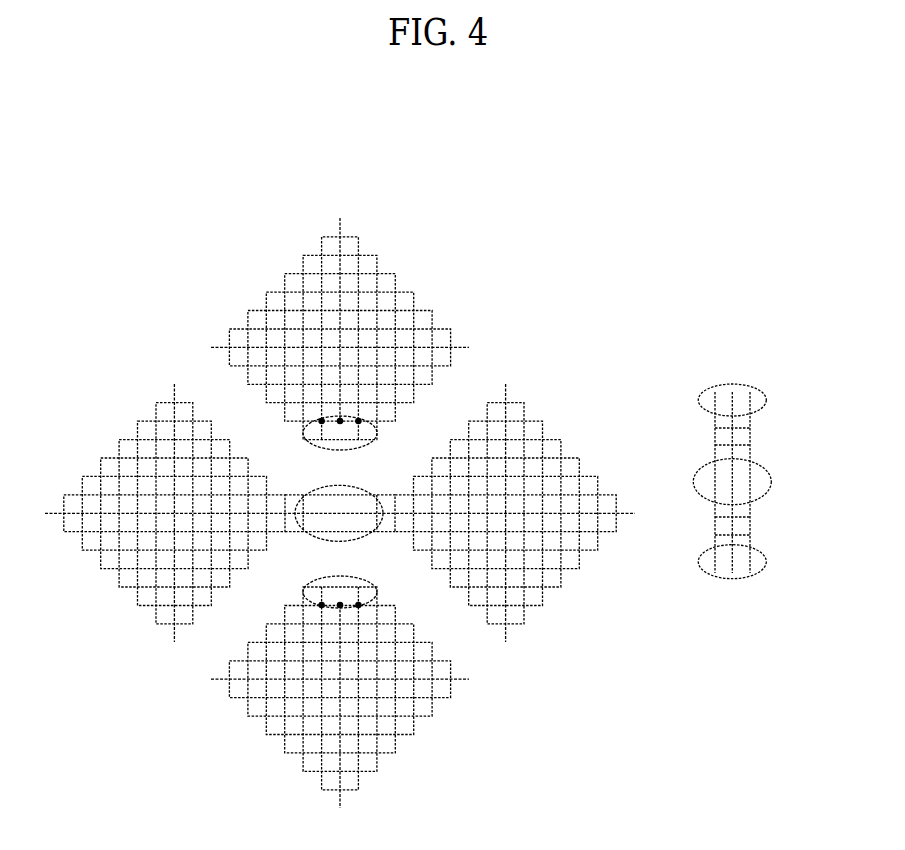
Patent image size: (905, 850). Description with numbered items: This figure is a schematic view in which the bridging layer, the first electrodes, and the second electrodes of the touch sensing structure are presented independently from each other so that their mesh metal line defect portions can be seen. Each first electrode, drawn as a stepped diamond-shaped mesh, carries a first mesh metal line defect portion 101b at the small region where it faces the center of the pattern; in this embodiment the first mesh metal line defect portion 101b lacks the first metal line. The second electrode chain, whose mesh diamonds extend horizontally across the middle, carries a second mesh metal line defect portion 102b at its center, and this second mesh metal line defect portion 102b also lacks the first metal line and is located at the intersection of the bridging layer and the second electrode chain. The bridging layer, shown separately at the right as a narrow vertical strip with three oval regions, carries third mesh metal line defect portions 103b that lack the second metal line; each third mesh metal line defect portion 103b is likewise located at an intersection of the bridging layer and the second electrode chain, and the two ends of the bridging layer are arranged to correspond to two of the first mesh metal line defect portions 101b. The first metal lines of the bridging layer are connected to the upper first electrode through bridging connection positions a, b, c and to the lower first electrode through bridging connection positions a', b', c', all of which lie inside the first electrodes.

The first mesh metal line defect portion 101b is at (380, 420).
The second mesh metal line defect portion 102b is at (357, 540).
The third mesh metal line defect portion 103b is at (760, 384).
The bridging connection position a is at (232, 377).
The bridging connection position b is at (257, 361).
The bridging connection position c is at (273, 331).
The bridging connection position a' is at (228, 649).
The bridging connection position b' is at (252, 662).
The bridging connection position c' is at (277, 678).